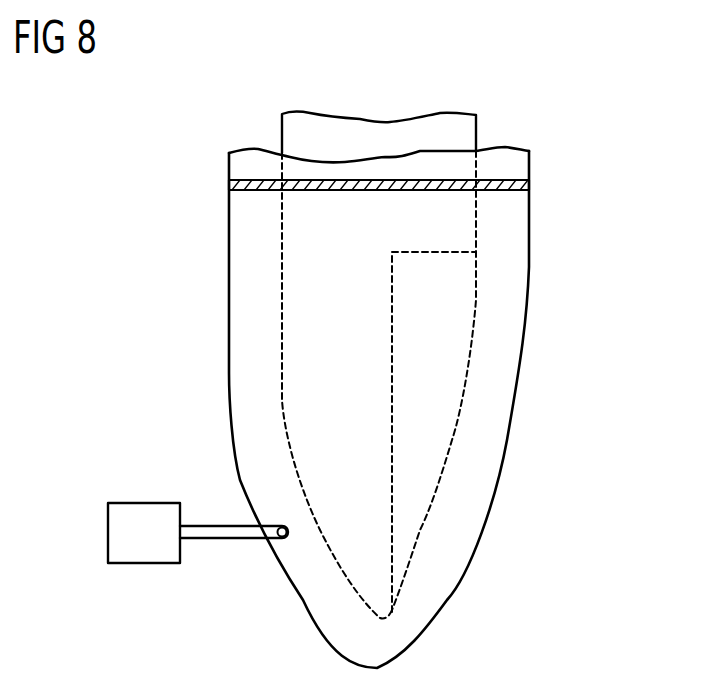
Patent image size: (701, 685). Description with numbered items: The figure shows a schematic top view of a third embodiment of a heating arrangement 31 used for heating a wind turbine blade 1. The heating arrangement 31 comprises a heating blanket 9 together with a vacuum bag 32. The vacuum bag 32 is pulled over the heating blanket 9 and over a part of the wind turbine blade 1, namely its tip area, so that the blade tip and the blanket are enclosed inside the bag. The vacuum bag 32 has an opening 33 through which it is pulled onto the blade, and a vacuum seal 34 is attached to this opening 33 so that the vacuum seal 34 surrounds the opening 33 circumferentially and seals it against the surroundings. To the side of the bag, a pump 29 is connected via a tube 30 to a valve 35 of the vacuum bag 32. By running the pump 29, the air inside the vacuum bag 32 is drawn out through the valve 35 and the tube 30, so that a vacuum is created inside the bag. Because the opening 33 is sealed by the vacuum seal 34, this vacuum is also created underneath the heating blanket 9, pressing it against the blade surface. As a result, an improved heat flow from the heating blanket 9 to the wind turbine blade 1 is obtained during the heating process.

The wind turbine blade 1 is at (311, 118).
The heating blanket 9 is at (425, 475).
The pump 29 is at (107, 535).
The tube 30 is at (217, 543).
The heating arrangement 31 is at (582, 114).
The vacuum bag 32 is at (520, 382).
The opening 33 is at (503, 148).
The vacuum seal 34 is at (392, 180).
The valve 35 is at (285, 541).